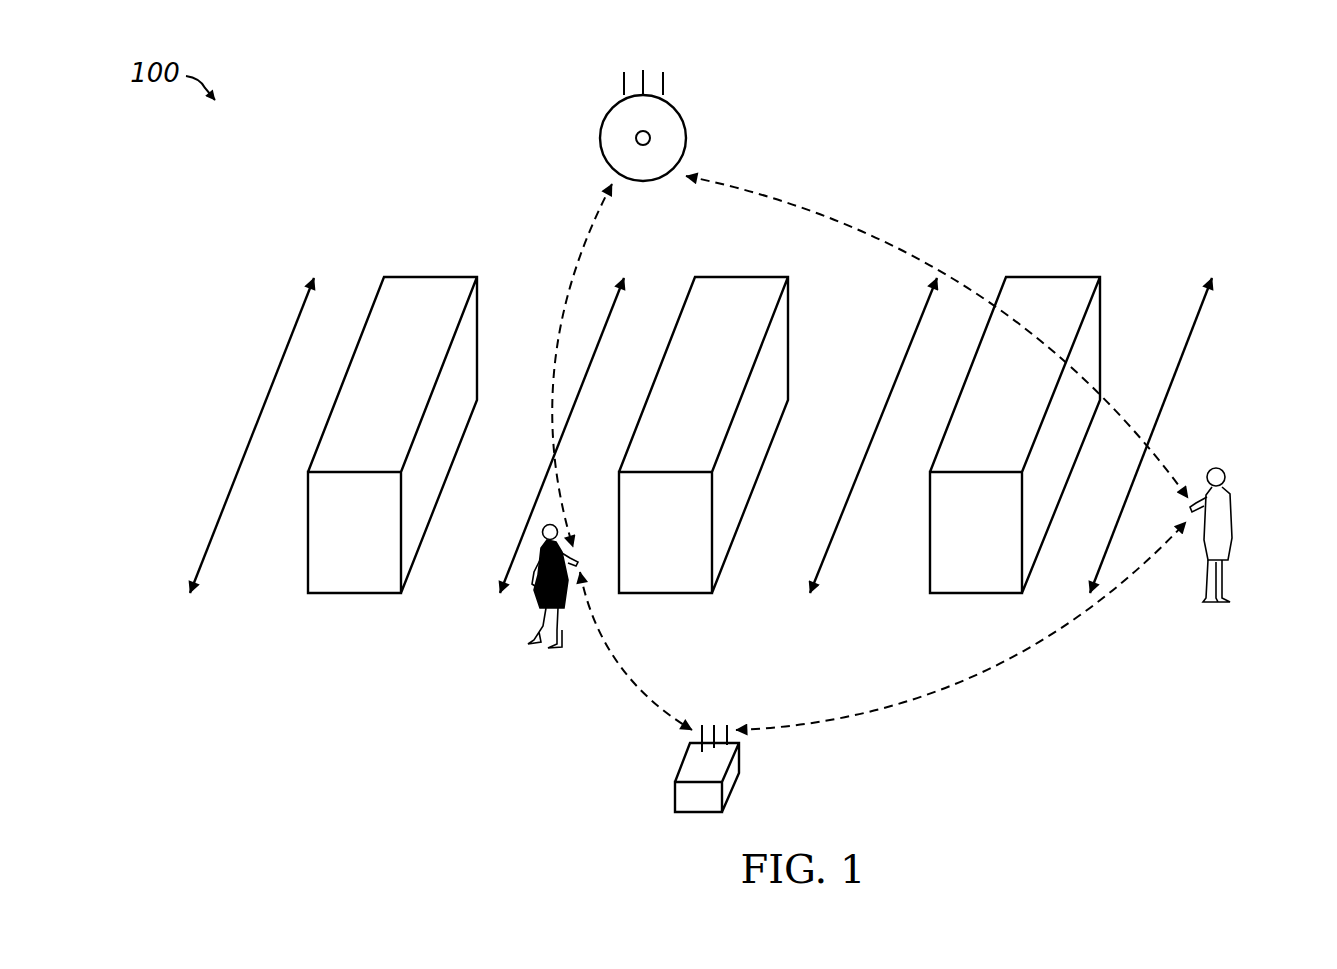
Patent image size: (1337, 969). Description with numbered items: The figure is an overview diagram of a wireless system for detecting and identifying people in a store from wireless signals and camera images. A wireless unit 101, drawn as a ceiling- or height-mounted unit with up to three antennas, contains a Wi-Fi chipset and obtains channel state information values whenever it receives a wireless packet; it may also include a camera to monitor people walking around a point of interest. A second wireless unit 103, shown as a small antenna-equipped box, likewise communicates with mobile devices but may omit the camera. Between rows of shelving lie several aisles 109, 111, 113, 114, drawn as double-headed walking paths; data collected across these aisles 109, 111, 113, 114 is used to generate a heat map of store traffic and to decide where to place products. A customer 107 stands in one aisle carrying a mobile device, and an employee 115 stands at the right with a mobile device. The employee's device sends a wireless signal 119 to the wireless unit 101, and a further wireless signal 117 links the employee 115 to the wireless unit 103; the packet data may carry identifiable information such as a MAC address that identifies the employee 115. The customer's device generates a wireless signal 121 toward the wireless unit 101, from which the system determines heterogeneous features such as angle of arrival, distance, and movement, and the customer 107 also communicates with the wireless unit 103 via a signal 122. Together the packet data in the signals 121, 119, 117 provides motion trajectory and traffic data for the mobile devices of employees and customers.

The wireless unit 101 is at (604, 115).
The wireless unit 103 is at (737, 782).
The customer 107 is at (542, 603).
The aisle 109 is at (270, 390).
The aisle 111 is at (545, 482).
The aisle 113 is at (890, 395).
The aisle 114 is at (1169, 390).
The employee 115 is at (1232, 517).
The wireless signal 117 is at (1047, 643).
The wireless signal 119 is at (858, 229).
The wireless signal 121 is at (585, 243).
The signal 122 is at (637, 677).